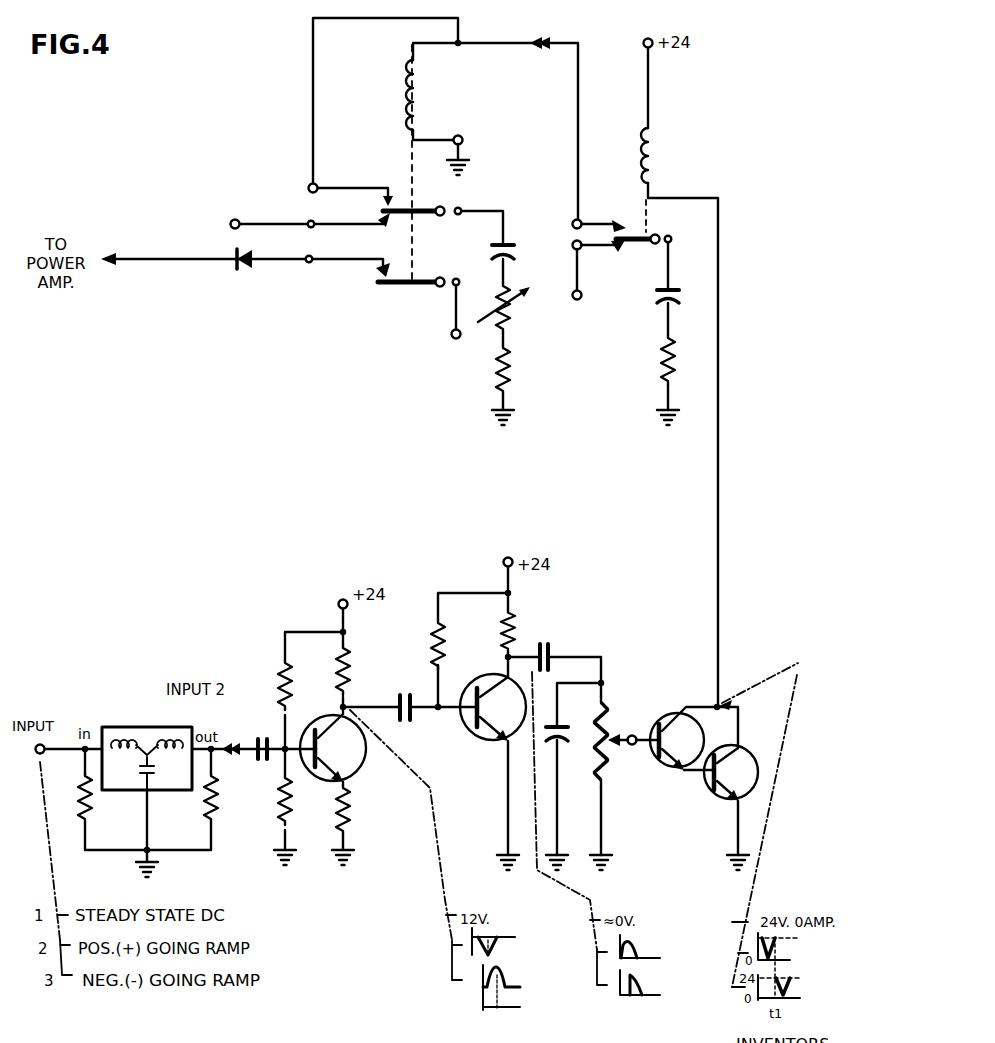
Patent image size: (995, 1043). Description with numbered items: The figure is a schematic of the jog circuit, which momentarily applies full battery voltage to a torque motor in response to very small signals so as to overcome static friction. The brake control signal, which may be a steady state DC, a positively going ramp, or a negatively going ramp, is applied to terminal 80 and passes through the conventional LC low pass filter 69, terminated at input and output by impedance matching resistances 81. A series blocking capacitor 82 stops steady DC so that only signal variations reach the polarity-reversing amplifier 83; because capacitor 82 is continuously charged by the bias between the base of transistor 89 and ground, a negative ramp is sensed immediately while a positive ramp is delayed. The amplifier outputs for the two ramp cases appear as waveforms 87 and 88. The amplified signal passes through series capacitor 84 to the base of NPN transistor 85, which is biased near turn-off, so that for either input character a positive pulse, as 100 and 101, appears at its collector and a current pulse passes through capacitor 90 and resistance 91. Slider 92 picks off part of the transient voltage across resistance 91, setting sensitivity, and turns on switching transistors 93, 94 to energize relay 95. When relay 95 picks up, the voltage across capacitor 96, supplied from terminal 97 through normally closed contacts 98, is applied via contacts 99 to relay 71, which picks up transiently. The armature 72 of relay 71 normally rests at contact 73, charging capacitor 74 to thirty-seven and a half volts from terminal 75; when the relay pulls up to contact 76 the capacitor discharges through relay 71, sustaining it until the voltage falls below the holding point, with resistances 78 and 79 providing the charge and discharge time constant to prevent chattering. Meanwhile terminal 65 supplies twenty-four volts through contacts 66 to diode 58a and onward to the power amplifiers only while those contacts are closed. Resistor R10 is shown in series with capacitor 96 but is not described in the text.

The relay 71 is at (420, 105).
The contact 76 is at (384, 196).
The contact 73 is at (379, 218).
The armature 72 is at (412, 225).
The terminal 75 is at (230, 229).
The diode 58a is at (240, 272).
The contacts 66 is at (378, 272).
The terminal 65 is at (395, 286).
The capacitor 74 is at (512, 252).
The resistance 78 is at (512, 318).
The resistance 79 is at (512, 375).
The relay 95 is at (655, 170).
The contacts 99 is at (612, 222).
The normally closed contacts 98 is at (634, 243).
The terminal 97 is at (575, 300).
The capacitor 96 is at (676, 285).
The resistor R10 is at (685, 378).
The terminal 80 is at (44, 755).
The low pass filter 69 is at (122, 837).
The impedance matching resistances 81 is at (78, 808).
The series blocking capacitor 82 is at (260, 734).
The transistor 89 is at (330, 714).
The amplifier 83 is at (398, 789).
The series capacitor 84 is at (412, 724).
The NPN transistor 85 is at (470, 735).
The capacitor 90 is at (550, 644).
The resistance 91 is at (606, 760).
The slider 92 is at (620, 735).
The switching transistor 93 is at (668, 772).
The switching transistor 94 is at (758, 756).
The output waveform 87 is at (514, 948).
The output waveform 88 is at (514, 982).
The positive pulse signal 100 is at (642, 950).
The positive pulse signal 101 is at (644, 986).